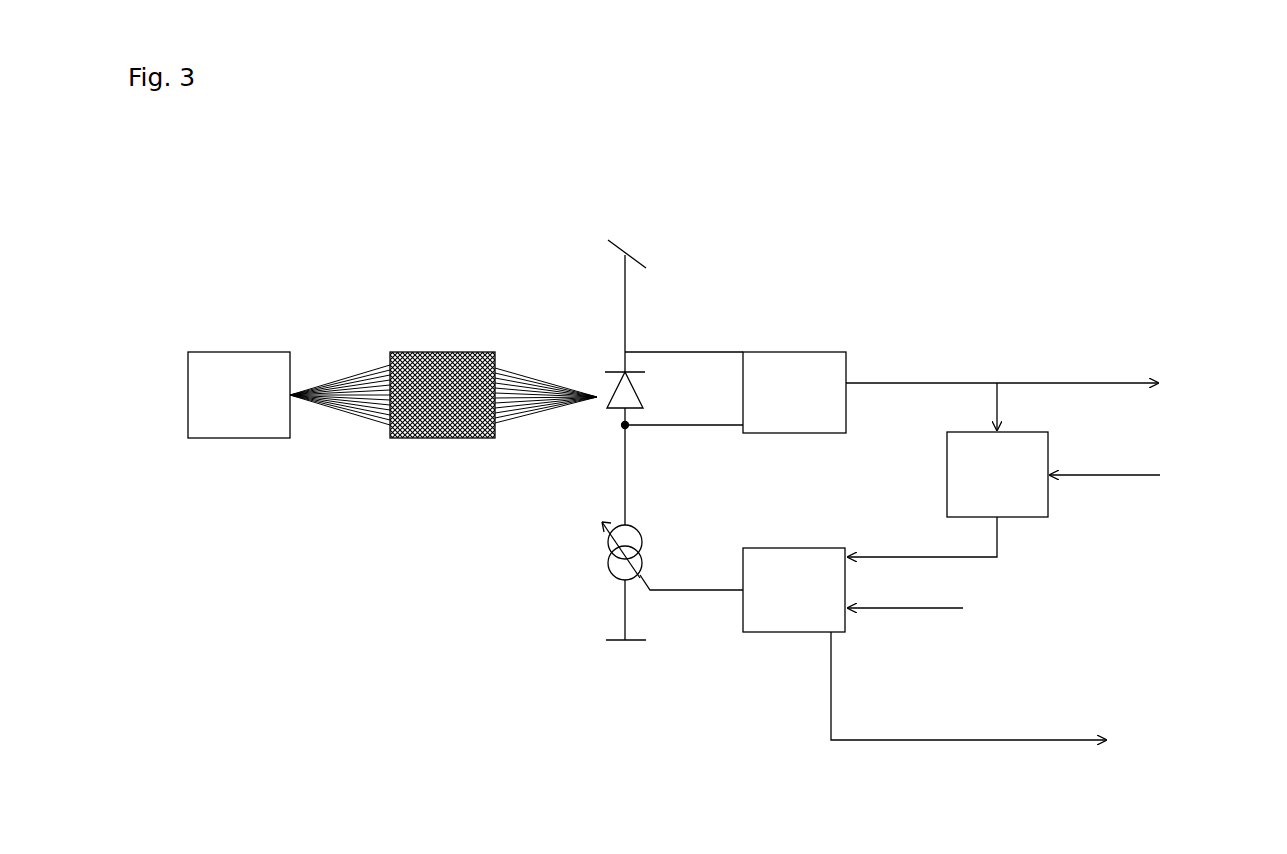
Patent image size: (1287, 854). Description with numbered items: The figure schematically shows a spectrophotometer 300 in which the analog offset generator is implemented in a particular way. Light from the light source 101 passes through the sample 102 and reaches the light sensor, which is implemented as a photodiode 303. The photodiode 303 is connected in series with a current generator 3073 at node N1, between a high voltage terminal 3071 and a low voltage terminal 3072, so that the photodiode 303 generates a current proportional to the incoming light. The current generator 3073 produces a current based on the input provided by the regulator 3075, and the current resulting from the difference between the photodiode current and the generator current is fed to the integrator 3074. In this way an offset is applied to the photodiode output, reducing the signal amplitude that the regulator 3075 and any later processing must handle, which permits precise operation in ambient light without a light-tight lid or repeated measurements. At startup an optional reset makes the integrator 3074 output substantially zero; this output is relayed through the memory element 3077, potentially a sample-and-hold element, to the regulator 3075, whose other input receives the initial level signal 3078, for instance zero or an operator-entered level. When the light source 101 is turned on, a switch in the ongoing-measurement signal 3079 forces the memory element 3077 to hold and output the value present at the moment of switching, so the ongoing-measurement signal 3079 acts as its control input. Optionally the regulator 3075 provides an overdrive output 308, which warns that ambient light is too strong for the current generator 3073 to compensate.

The spectrophotometer 300 is at (1236, 106).
The light source 101 is at (280, 350).
The sample 102 is at (484, 350).
The photodiode 303 is at (606, 366).
The node N1 is at (620, 428).
The high voltage terminal 3071 is at (628, 234).
The low voltage terminal 3072 is at (628, 648).
The current generator 3073 is at (592, 556).
The integrator 3074 is at (793, 348).
The regulator 3075 is at (758, 636).
The memory element 3077 is at (936, 472).
The initial level signal 3078 is at (953, 612).
The ongoing-measurement signal 3079 is at (1160, 475).
The overdrive output 308 is at (1096, 736).